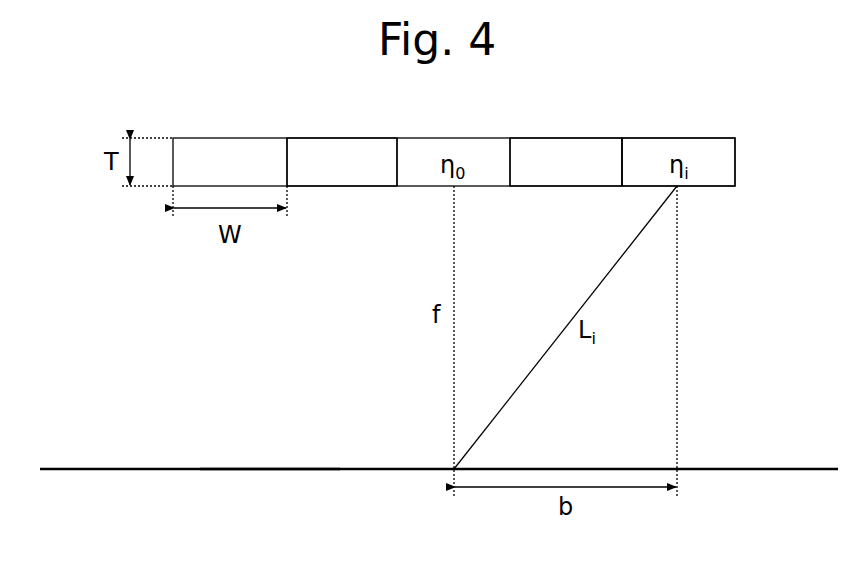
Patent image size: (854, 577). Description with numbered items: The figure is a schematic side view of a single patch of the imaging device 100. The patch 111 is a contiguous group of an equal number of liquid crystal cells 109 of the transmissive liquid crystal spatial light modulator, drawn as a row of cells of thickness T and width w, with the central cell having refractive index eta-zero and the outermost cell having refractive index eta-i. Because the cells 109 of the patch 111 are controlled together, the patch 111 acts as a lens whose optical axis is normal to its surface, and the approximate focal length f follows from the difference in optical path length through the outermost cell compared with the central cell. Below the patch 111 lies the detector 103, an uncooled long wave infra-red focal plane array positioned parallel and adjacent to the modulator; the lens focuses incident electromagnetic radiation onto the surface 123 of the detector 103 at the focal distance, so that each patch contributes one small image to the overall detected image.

The imaging device 100 is at (118, 82).
The patch 111 is at (302, 118).
The liquid crystal cell 109 is at (573, 150).
The surface 123 is at (268, 462).
The detector 103 is at (320, 532).